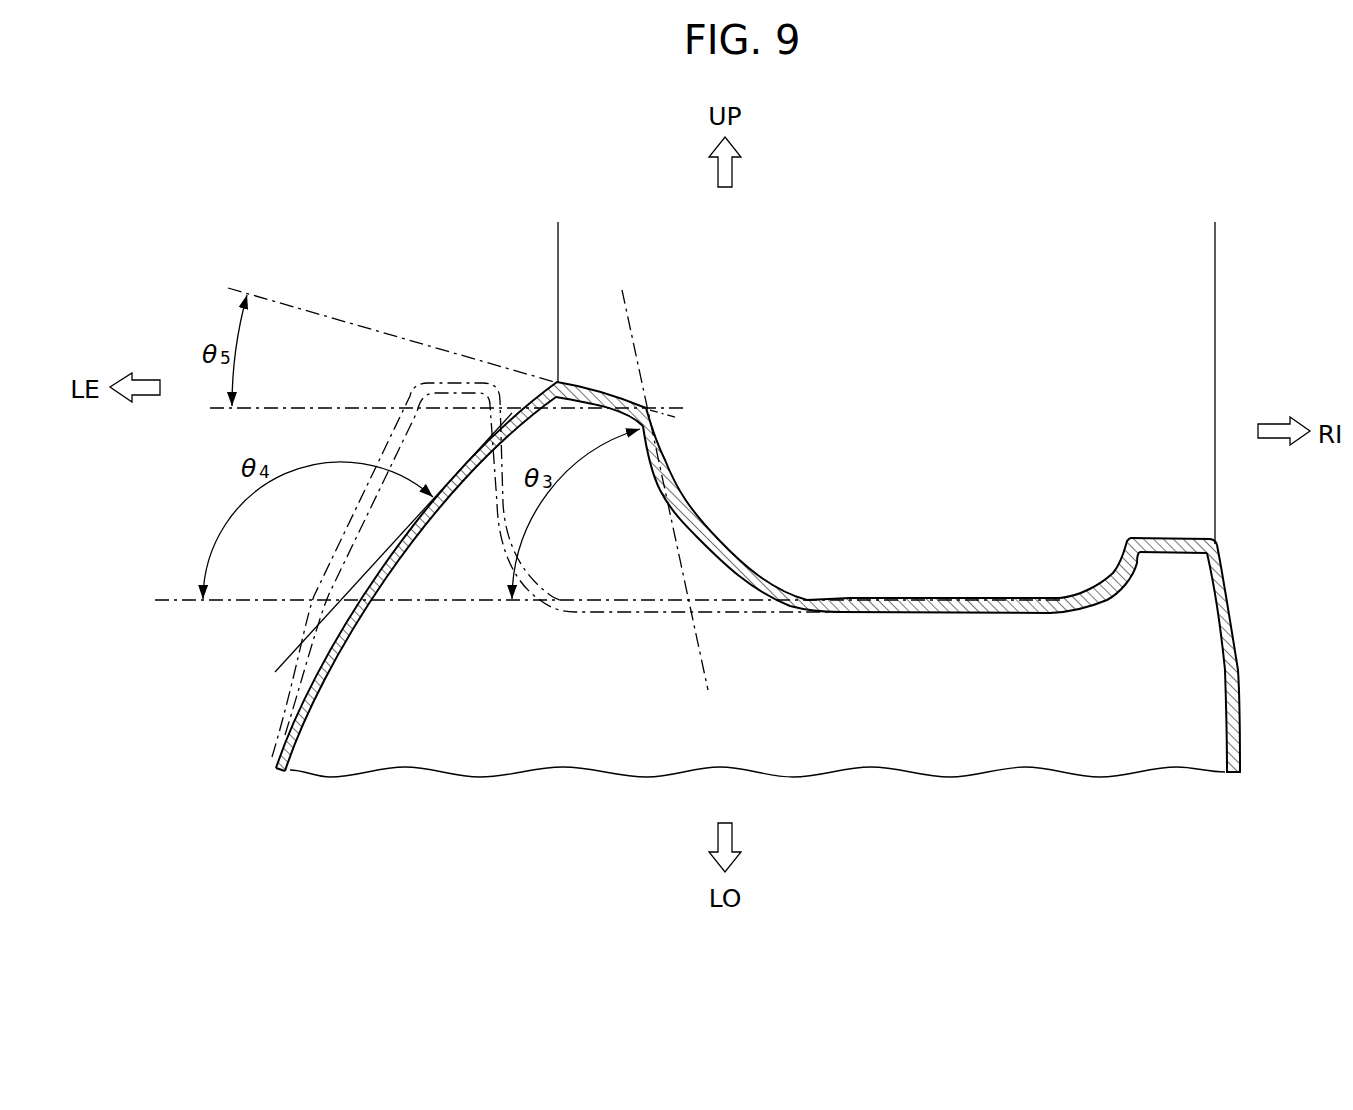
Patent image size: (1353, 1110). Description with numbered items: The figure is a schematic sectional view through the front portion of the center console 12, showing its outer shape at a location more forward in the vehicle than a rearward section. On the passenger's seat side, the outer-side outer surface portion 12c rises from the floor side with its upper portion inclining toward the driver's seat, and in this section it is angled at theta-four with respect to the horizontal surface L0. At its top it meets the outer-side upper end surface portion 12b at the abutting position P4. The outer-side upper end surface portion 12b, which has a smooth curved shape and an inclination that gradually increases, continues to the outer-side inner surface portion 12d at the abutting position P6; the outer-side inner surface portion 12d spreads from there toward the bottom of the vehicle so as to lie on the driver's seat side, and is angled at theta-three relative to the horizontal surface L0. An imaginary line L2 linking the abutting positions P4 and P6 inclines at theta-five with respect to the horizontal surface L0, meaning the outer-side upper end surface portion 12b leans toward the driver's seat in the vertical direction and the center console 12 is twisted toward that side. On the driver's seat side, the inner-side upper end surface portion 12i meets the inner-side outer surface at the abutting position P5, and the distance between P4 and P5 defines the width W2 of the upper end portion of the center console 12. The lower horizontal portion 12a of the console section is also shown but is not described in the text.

The center console 12 is at (814, 526).
The bottom wall portion 12a is at (968, 597).
The outer-side upper end surface portion 12b is at (600, 388).
The outer-side outer surface portion 12c is at (462, 468).
The outer-side inner surface portion 12d is at (668, 452).
The inner-side upper end surface portion 12i is at (1169, 530).
The abutting position P4 is at (553, 378).
The abutting position P5 is at (1231, 540).
The abutting position P6 is at (652, 396).
The horizontal surface L0 is at (218, 415).
The imaginary line L2 is at (236, 285).
The width W2 is at (1212, 236).